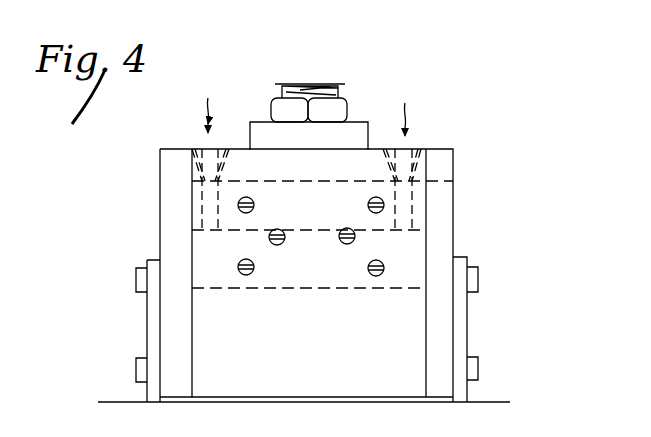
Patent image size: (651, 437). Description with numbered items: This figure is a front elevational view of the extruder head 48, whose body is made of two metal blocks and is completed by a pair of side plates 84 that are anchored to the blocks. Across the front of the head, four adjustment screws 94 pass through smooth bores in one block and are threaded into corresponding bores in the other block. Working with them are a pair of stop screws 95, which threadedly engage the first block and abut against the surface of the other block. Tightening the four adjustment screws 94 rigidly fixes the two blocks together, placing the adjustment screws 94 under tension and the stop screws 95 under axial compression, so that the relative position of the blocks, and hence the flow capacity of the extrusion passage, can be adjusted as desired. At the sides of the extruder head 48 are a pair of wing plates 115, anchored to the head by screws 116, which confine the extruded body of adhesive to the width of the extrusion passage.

The extruder head 48 is at (457, 158).
The side plates 84 is at (160, 172).
The adjustment screws 94 is at (160, 250).
The stop screws 95 is at (378, 260).
The wing plates 115 is at (460, 327).
The screws 116 is at (479, 279).